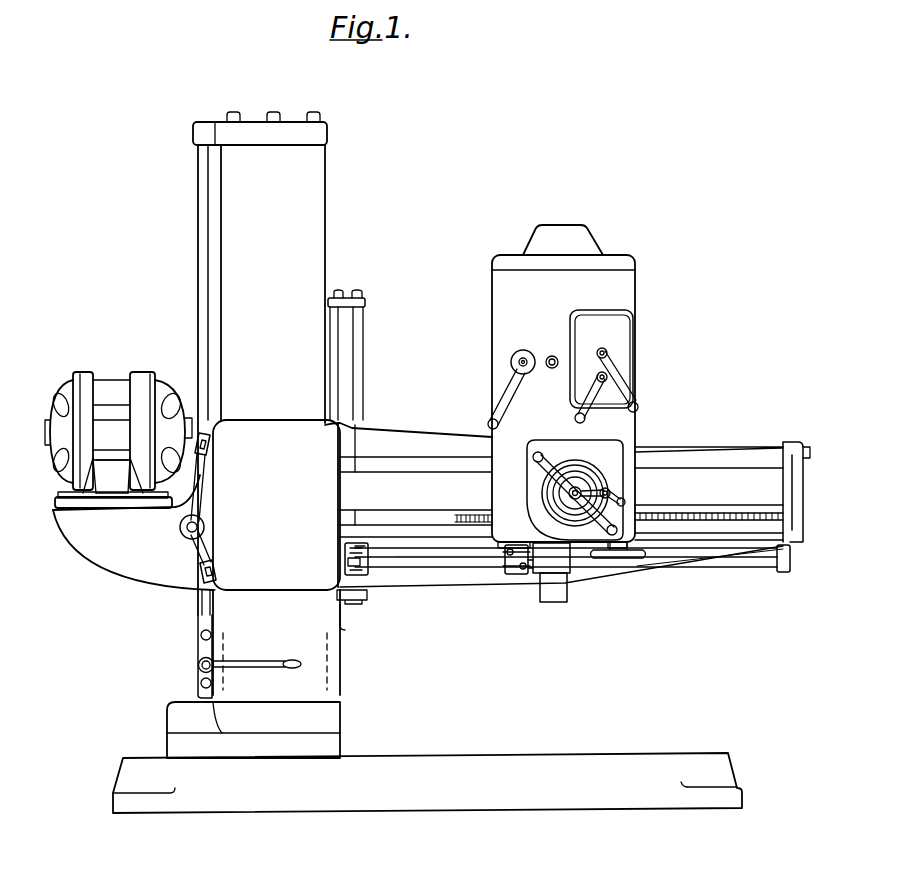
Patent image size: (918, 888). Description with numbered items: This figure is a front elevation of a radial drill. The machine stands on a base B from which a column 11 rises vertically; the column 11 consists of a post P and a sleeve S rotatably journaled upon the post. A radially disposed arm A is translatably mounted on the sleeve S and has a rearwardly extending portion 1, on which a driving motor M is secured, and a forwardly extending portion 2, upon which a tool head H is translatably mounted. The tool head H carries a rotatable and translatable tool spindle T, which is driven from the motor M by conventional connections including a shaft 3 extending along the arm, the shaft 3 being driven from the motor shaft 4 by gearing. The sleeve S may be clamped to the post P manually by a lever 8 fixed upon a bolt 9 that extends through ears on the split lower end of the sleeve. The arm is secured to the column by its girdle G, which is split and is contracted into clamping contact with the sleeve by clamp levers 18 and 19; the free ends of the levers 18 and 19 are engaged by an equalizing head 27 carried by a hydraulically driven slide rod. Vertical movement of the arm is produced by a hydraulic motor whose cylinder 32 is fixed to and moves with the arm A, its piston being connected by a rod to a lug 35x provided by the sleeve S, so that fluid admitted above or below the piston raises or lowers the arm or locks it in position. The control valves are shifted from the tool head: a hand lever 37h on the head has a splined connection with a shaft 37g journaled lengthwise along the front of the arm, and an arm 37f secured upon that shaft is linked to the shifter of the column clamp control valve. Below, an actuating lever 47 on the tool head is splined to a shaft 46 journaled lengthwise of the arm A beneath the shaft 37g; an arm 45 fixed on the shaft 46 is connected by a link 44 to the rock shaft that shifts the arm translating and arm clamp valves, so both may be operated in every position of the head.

The rearwardly extending portion 1 is at (133, 532).
The forwardly extending portion 2 is at (709, 493).
The shaft 3 is at (760, 447).
The motor shaft 4 is at (198, 400).
The lever 8 is at (256, 660).
The bolt 9 is at (198, 666).
The column 11 is at (196, 300).
The clamp lever 18 is at (201, 474).
The clamp lever 19 is at (210, 538).
The equalizing head 27 is at (180, 526).
The cylinder 32 is at (352, 350).
The lug 35x is at (347, 628).
The arm 37f is at (358, 546).
The shaft 37g is at (441, 558).
The hand lever 37h is at (508, 560).
The link 44 is at (345, 553).
The arm 45 is at (345, 566).
The shaft 46 is at (395, 572).
The actuating lever 47 is at (525, 573).
The arm A is at (372, 422).
The base B is at (427, 783).
The girdle G is at (276, 505).
The tool head H is at (563, 386).
The driving motor M is at (113, 380).
The post P is at (333, 715).
The sleeve S is at (260, 267).
The tool spindle T is at (568, 592).